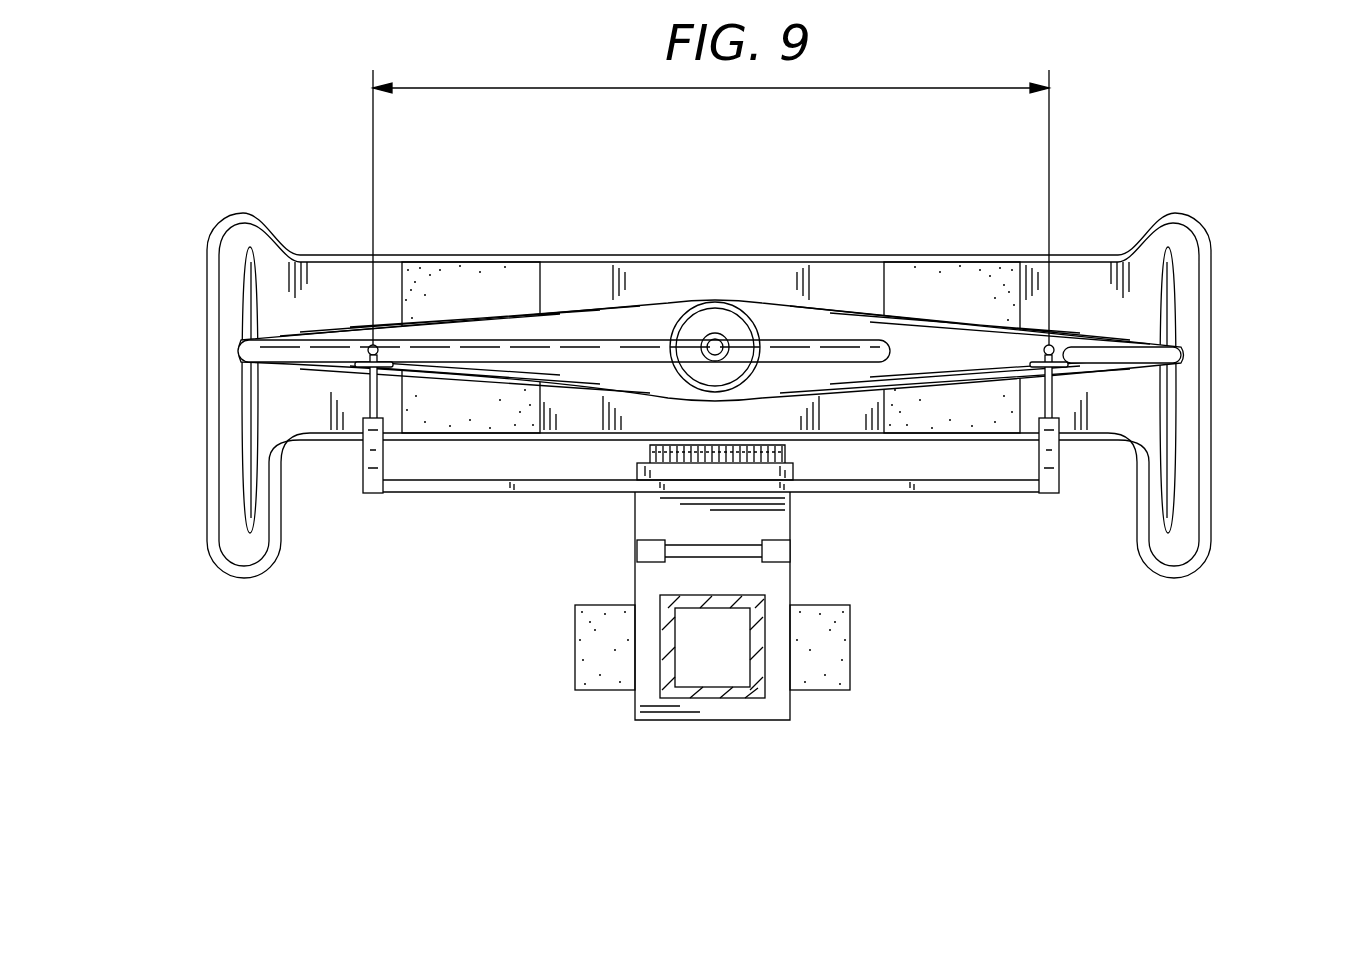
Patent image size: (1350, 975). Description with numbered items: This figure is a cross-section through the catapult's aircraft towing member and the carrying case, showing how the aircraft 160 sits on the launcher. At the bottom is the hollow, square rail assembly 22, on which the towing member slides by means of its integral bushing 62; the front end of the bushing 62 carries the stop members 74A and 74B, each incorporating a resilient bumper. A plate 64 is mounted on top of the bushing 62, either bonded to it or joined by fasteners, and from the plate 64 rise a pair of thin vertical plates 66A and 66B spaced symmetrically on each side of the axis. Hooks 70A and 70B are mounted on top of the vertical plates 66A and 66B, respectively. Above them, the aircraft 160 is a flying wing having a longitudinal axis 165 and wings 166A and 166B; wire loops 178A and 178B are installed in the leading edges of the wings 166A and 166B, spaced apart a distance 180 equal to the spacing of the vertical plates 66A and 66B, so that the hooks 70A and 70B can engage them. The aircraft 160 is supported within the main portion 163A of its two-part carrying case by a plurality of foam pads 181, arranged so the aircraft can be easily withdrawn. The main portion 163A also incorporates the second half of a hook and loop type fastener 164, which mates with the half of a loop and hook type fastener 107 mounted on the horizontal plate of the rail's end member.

The rail assembly 22 is at (740, 708).
The bushing 62 is at (665, 722).
The plate 64 is at (875, 490).
The vertical plate 66A is at (360, 453).
The vertical plate 66B is at (1062, 455).
The hook 70A is at (367, 388).
The hook 70B is at (1056, 396).
The stop member 74A is at (575, 663).
The stop member 74B is at (850, 663).
The half of a loop and hook type fastener 107 is at (600, 465).
The aircraft 160 is at (712, 296).
The main portion 163A is at (583, 258).
The second half of a hook and loop type fastener 164 is at (600, 450).
The longitudinal axis 165 is at (712, 347).
The wing 166A is at (430, 307).
The wing 166B is at (970, 320).
The wire loop 178A is at (357, 362).
The wire loop 178B is at (1066, 362).
The distance 180 is at (712, 89).
The foam pads 181 is at (548, 272).